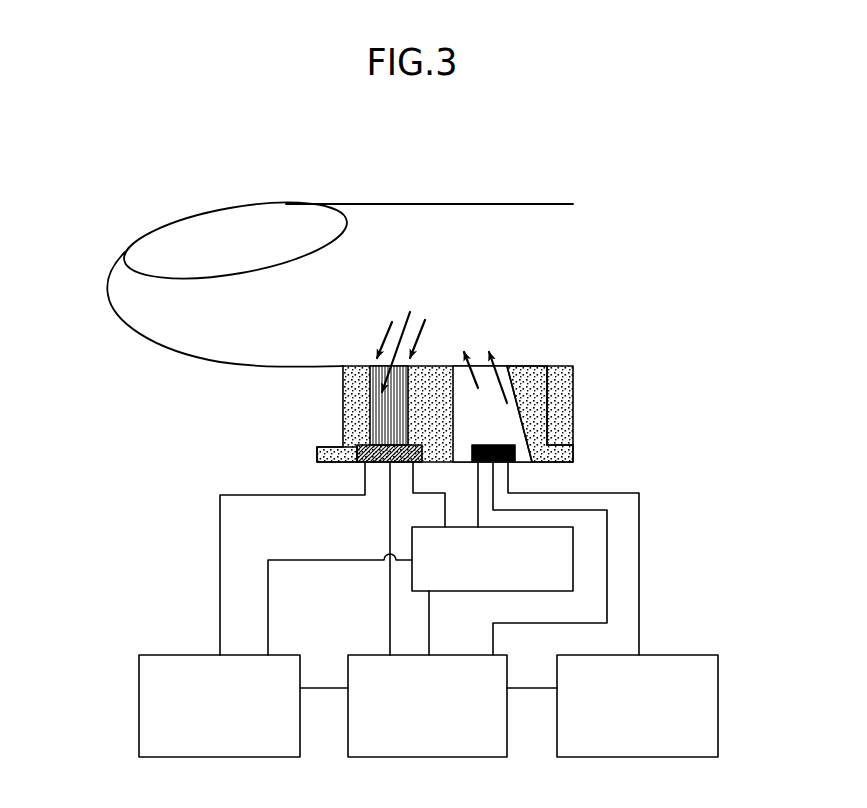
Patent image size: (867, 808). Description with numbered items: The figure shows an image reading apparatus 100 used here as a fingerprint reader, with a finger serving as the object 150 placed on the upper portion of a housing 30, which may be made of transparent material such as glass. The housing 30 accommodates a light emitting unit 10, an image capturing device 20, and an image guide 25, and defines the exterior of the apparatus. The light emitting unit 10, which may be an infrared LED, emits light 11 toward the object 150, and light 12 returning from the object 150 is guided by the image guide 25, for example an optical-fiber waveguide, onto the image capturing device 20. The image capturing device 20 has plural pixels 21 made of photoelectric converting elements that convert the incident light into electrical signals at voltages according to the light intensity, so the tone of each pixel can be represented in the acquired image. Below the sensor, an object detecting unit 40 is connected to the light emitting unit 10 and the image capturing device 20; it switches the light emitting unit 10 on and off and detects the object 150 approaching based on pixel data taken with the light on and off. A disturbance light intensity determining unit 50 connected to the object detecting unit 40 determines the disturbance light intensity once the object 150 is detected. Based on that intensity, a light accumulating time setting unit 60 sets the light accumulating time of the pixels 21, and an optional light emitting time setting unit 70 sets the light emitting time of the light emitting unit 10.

The image reading apparatus 100 is at (596, 352).
The object 150 is at (438, 229).
The light emitting unit 10 is at (510, 446).
The light 11 is at (475, 362).
The light 12 is at (384, 341).
The image capturing device 20 is at (350, 432).
The pixels 21 is at (345, 452).
The image guide 25 is at (371, 400).
The housing 30 is at (548, 390).
The object detecting unit 40 is at (528, 592).
The disturbance light intensity determining unit 50 is at (485, 757).
The light accumulating time setting unit 60 is at (276, 757).
The light emitting time setting unit 70 is at (694, 757).